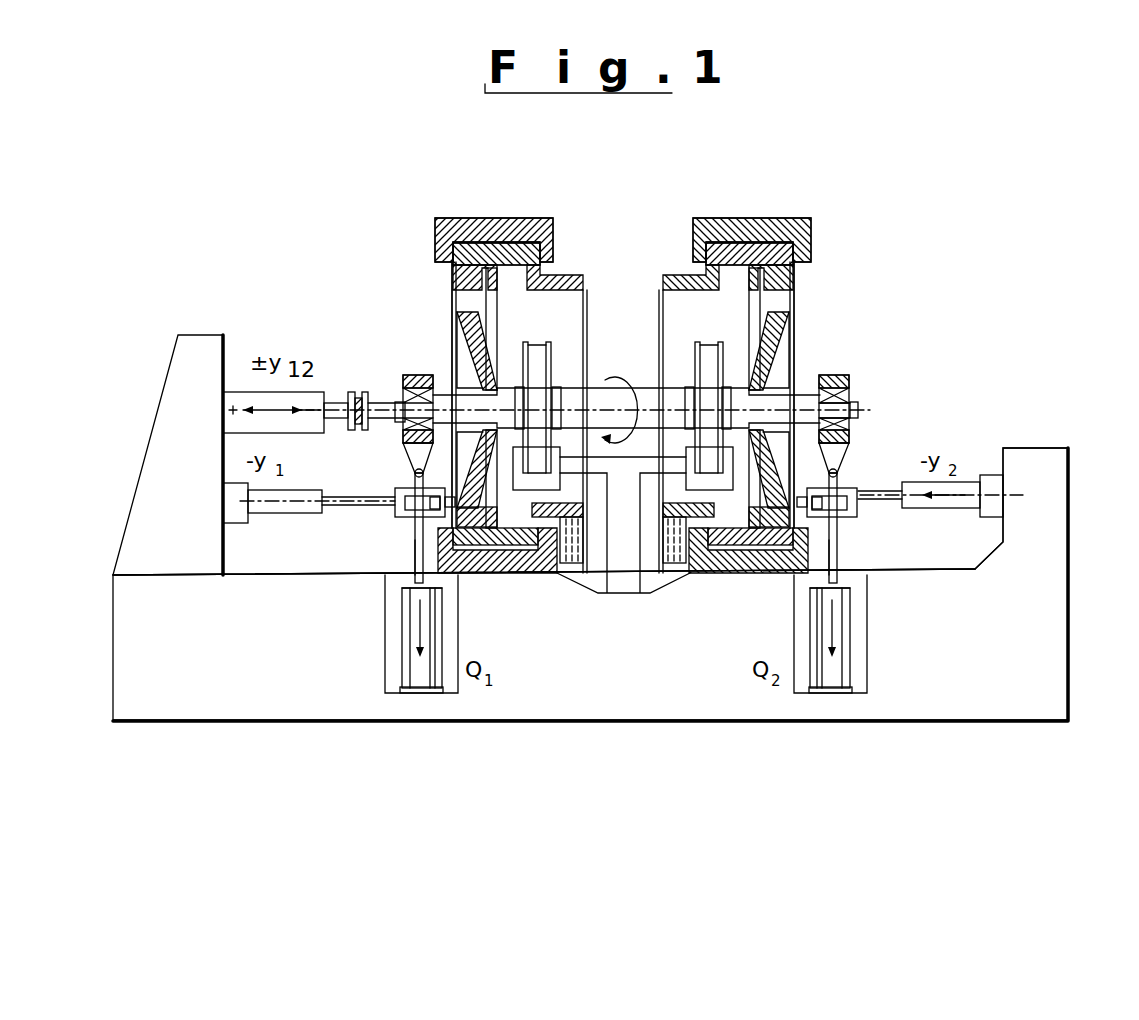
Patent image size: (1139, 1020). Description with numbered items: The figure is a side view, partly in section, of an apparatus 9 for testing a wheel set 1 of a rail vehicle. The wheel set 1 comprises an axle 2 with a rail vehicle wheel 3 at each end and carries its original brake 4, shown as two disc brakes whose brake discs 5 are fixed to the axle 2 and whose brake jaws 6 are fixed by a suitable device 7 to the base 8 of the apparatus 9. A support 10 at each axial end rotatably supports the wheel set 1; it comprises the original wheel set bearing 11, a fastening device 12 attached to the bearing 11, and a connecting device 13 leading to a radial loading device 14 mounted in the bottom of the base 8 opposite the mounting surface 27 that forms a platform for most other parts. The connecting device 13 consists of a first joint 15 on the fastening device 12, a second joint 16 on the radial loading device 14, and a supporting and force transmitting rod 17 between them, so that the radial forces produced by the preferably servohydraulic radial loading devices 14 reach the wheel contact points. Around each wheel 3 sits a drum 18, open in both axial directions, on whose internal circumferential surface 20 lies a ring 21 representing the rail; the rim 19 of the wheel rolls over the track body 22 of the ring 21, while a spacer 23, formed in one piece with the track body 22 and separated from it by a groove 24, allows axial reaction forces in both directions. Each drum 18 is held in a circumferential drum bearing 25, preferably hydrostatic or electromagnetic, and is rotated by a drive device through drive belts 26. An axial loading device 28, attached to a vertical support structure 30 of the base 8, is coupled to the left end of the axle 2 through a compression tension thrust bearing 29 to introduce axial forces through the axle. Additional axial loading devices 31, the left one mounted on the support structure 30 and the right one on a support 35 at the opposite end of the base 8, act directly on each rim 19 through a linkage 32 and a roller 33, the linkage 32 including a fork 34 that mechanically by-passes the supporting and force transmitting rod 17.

The wheel set 1 is at (639, 346).
The axle 2 is at (586, 392).
The rail vehicle wheel 3 is at (458, 328).
The brake 4 is at (533, 338).
The brake disc 5 is at (548, 360).
The brake jaw 6 is at (525, 492).
The device 7 is at (636, 574).
The base 8 is at (621, 721).
The apparatus 9 is at (932, 348).
The support 10 is at (396, 480).
The wheel set bearing 11 is at (413, 376).
The fastening device 12 is at (415, 455).
The connecting device 13 is at (405, 553).
The radial loading device 14 is at (398, 627).
The first joint 15 is at (405, 470).
The second joint 16 is at (400, 582).
The supporting and force transmitting rod 17 is at (414, 548).
The drum 18 is at (484, 265).
The rim 19 is at (464, 318).
The internal circumferential surface 20 is at (516, 258).
The ring 21 is at (448, 280).
The track body 22 is at (466, 248).
The spacer 23 is at (494, 258).
The groove 24 is at (551, 252).
The drum bearing 25 is at (440, 218).
The drive belt 26 is at (563, 565).
The mounting surface 27 is at (252, 572).
The axial loading device 28 is at (235, 395).
The compression tension thrust bearing 29 is at (355, 392).
The vertical support structure 30 is at (178, 386).
The additional axial loading device 31 is at (268, 513).
The linkage 32 is at (457, 532).
The roller 33 is at (447, 494).
The fork 34 is at (394, 514).
The support 35 is at (1053, 482).